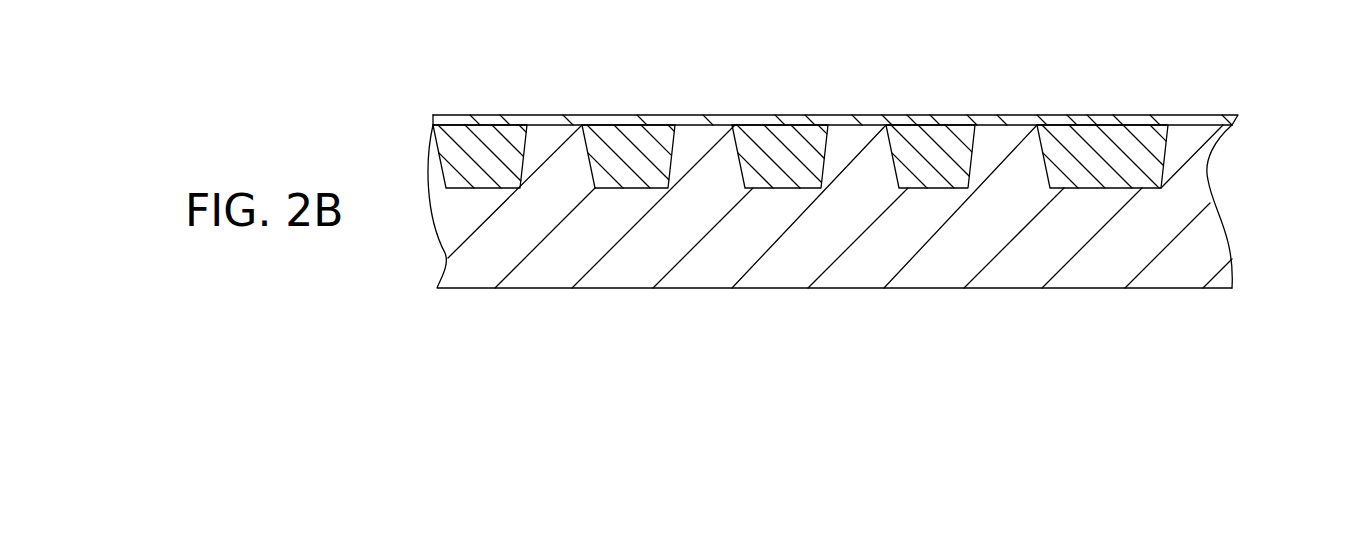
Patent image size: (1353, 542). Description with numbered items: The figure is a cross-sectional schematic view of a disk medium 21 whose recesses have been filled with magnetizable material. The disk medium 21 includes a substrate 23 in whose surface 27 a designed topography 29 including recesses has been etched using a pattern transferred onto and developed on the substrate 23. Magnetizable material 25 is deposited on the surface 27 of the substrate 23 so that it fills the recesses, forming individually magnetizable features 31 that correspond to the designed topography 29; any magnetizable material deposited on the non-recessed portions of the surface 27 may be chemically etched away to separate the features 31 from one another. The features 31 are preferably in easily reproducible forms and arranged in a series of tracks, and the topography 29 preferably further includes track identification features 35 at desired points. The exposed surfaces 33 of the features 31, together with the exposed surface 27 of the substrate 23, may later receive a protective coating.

The disk medium 21 is at (1237, 168).
The substrate 23 is at (1190, 260).
The magnetizable material 25 is at (782, 187).
The surface 27 is at (473, 188).
The topography 29 is at (1040, 70).
The features 31 is at (627, 185).
The exposed surfaces 33 is at (460, 125).
The track identification features 35 is at (1207, 80).